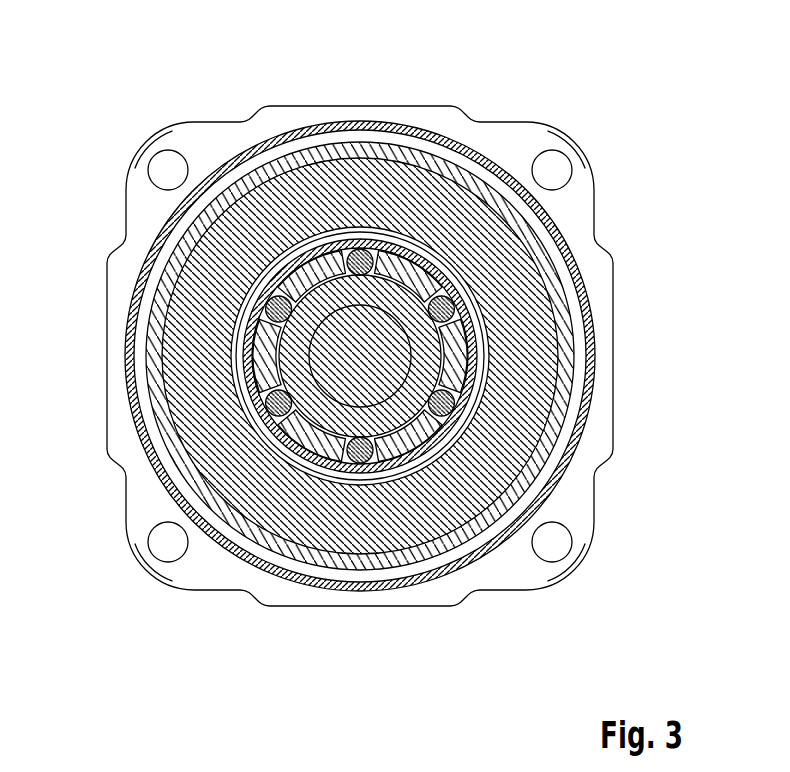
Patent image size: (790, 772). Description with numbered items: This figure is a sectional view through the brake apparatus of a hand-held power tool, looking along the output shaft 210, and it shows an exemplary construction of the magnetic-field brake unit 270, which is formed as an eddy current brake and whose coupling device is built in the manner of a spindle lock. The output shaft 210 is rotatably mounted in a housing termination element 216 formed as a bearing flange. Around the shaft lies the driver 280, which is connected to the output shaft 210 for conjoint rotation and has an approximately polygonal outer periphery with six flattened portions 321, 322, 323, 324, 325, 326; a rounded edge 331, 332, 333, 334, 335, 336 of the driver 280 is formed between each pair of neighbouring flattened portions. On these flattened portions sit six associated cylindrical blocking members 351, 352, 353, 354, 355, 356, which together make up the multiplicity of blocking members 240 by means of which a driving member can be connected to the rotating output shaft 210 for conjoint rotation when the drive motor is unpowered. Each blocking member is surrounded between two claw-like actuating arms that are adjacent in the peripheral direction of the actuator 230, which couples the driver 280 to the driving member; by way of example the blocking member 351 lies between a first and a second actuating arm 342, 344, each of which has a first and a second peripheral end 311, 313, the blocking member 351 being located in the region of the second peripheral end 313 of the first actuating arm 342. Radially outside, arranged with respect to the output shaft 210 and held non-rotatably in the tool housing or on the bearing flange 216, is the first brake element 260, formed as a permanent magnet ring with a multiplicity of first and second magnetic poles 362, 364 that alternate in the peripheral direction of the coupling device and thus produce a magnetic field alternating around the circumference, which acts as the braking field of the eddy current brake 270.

The output shaft 210 is at (388, 368).
The housing termination element 216 is at (196, 150).
The actuator 230 is at (312, 438).
The blocking members 240 is at (205, 300).
The first brake element 260 is at (362, 249).
The magnetic-field brake unit 270 is at (440, 400).
The driver 280 is at (277, 417).
The first peripheral end 311 is at (300, 275).
The second peripheral end 313 is at (405, 235).
The flattened portion 321 is at (462, 175).
The flattened portion 322 is at (456, 338).
The flattened portion 323 is at (540, 548).
The flattened portion 324 is at (360, 530).
The flattened portion 325 is at (340, 477).
The flattened portion 326 is at (285, 330).
The rounded edge 331 is at (565, 165).
The rounded edge 332 is at (478, 356).
The rounded edge 333 is at (440, 520).
The rounded edge 334 is at (290, 525).
The rounded edge 335 is at (263, 357).
The rounded edge 336 is at (275, 175).
The first actuating arm 342 is at (305, 200).
The second actuating arm 344 is at (480, 180).
The blocking member 351 is at (375, 250).
The blocking member 352 is at (432, 309).
The blocking member 353 is at (420, 440).
The blocking member 354 is at (395, 530).
The blocking member 355 is at (300, 450).
The blocking member 356 is at (285, 292).
The first magnetic pole 362 is at (335, 235).
The second magnetic pole 364 is at (412, 182).